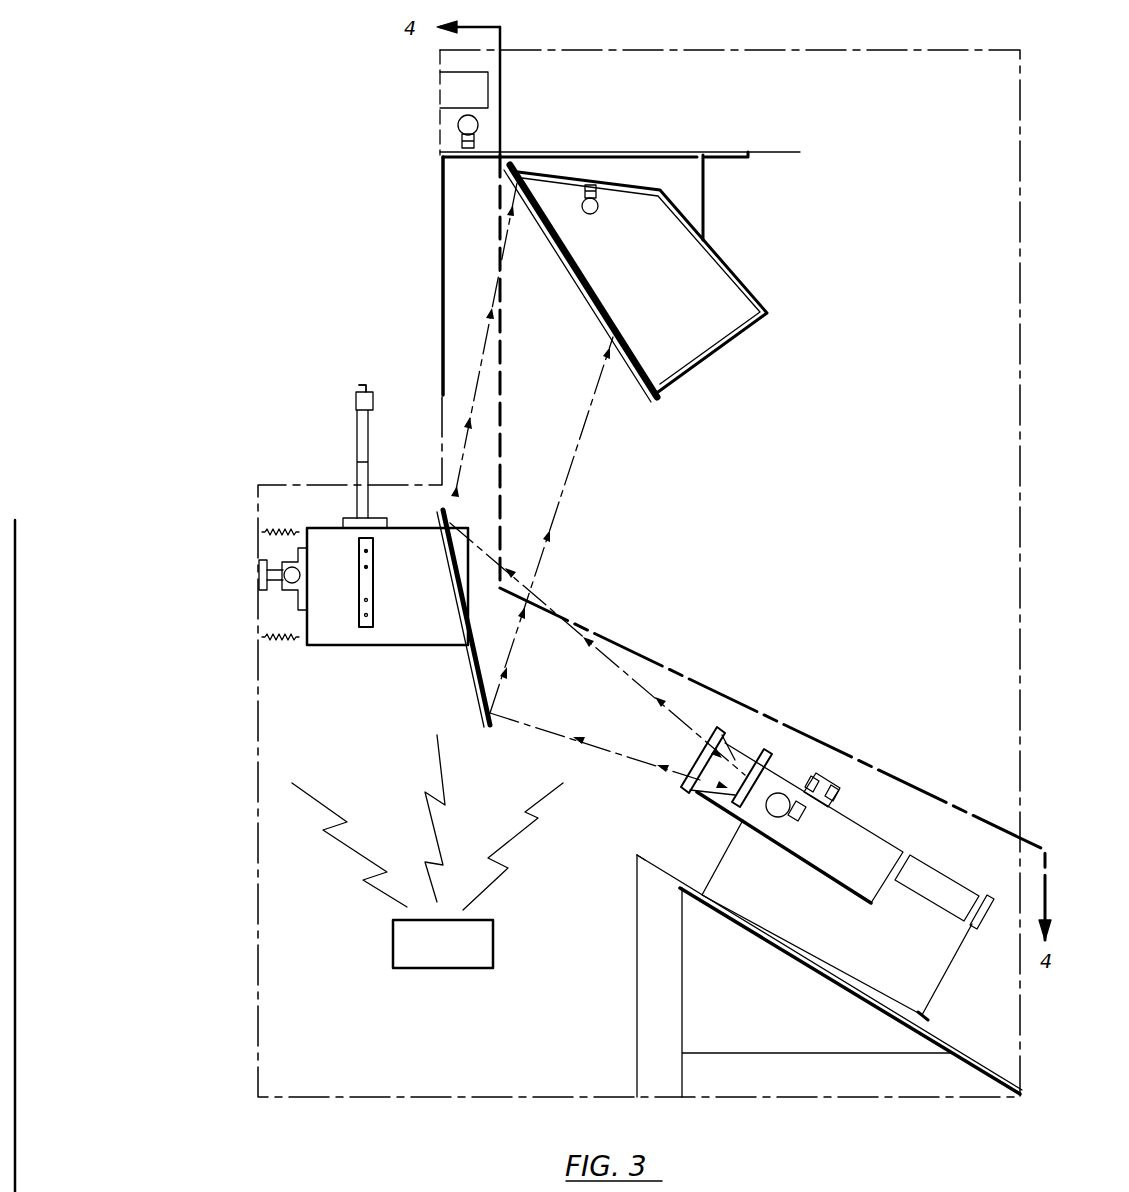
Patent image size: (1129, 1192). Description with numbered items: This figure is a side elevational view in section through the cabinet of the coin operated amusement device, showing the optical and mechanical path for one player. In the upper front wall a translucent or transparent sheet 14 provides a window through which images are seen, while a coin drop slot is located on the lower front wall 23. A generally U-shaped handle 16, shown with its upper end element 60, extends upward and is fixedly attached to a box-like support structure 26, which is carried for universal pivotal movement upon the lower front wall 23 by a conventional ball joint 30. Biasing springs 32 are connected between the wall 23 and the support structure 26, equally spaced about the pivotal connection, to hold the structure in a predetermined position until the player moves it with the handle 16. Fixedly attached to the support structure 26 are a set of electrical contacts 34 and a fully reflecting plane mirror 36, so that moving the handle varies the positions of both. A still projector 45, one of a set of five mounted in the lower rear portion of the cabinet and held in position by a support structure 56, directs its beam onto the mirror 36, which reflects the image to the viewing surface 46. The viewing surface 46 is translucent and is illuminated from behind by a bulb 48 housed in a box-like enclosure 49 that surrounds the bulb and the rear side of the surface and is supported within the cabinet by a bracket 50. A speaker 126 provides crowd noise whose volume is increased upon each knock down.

The translucent or transparent sheet 14 is at (440, 268).
The U-shaped handle 16 is at (356, 432).
The lower front wall 23 is at (258, 752).
The box-like support structure 26 is at (372, 632).
The ball joint 30 is at (257, 590).
The biasing springs 32 is at (275, 528).
The set of electrical contacts 34 is at (392, 600).
The plane mirror 36 is at (483, 652).
The still projector 45 is at (870, 838).
The viewing surface 46 is at (592, 306).
The bulb 48 is at (598, 212).
The box-like enclosure 49 is at (722, 270).
The bracket 50 is at (705, 215).
The support structure 56 is at (762, 942).
The cap 60 is at (362, 385).
The speaker 126 is at (487, 945).